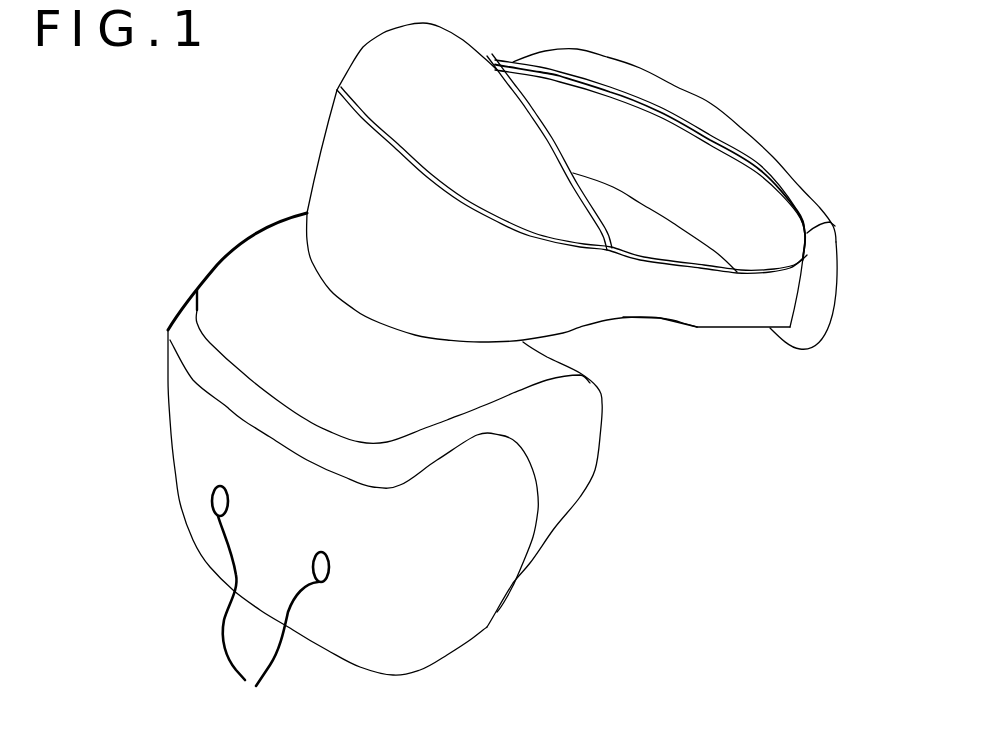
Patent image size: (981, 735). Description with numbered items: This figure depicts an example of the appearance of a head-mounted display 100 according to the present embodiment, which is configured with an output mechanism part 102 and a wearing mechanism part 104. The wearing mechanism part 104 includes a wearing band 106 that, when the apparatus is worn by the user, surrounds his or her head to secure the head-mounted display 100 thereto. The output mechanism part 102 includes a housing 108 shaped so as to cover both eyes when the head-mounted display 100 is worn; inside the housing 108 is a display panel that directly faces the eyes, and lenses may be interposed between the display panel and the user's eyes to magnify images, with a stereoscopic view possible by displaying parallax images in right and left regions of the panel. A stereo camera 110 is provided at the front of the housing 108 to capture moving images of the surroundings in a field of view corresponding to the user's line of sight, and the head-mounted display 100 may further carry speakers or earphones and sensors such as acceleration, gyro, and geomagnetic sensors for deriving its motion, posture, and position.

The head-mounted display 100 is at (272, 128).
The output mechanism part 102 is at (123, 203).
The wearing mechanism part 104 is at (843, 110).
The wearing band 106 is at (700, 328).
The housing 108 is at (483, 630).
The stereo camera 110 is at (270, 610).